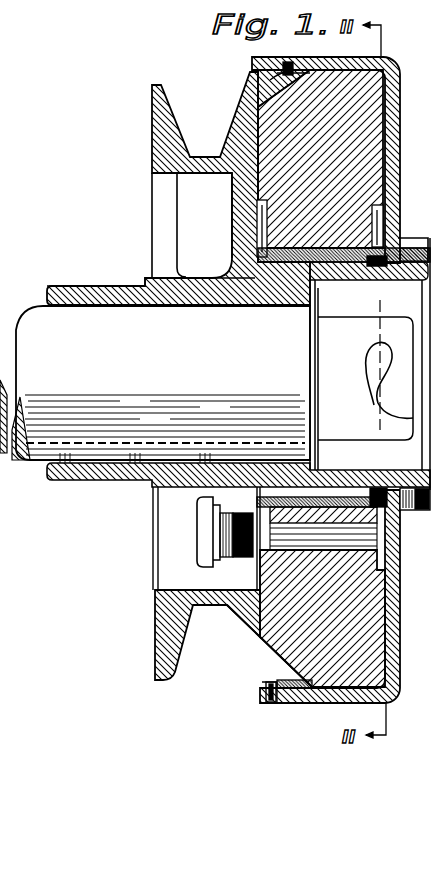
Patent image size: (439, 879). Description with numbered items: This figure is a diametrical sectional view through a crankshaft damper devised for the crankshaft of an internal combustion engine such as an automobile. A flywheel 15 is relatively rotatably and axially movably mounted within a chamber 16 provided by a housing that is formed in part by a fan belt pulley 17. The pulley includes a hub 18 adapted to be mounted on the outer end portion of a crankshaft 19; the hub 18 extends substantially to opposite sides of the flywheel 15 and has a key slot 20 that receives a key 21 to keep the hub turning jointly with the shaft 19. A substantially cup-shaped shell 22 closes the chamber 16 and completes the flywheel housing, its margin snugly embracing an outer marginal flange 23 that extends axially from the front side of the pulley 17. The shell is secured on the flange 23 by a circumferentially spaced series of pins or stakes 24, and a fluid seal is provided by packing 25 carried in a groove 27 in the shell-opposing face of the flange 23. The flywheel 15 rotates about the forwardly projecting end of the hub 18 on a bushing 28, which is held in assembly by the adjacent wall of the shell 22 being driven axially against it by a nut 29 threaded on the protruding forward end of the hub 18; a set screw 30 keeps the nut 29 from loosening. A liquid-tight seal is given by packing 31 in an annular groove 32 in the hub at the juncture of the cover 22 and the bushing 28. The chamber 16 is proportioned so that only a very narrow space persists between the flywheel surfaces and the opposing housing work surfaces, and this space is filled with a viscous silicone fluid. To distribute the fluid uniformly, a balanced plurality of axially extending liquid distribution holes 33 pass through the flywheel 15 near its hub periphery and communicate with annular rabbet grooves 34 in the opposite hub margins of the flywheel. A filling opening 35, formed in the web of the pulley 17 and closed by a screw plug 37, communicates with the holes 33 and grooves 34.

The flywheel 15 is at (300, 153).
The chamber 16 is at (232, 211).
The fan belt pulley 17 is at (158, 115).
The hub 18 is at (178, 283).
The crankshaft 19 is at (42, 332).
The key slot 20 is at (100, 465).
The key 21 is at (165, 455).
The cup-shaped shell 22 is at (357, 62).
The outer marginal flange 23 is at (262, 80).
The pins or stakes 24 is at (264, 697).
The packing 25 is at (286, 63).
The groove 27 is at (262, 676).
The bushing 28 is at (293, 262).
The nut 29 is at (415, 250).
The set screw 30 is at (415, 488).
The packing 31 is at (385, 262).
The annular groove 32 is at (376, 263).
The liquid distribution holes 33 is at (355, 537).
The annular rabbet grooves 34 is at (392, 232).
The filling opening 35 is at (227, 569).
The screw plug 37 is at (205, 518).